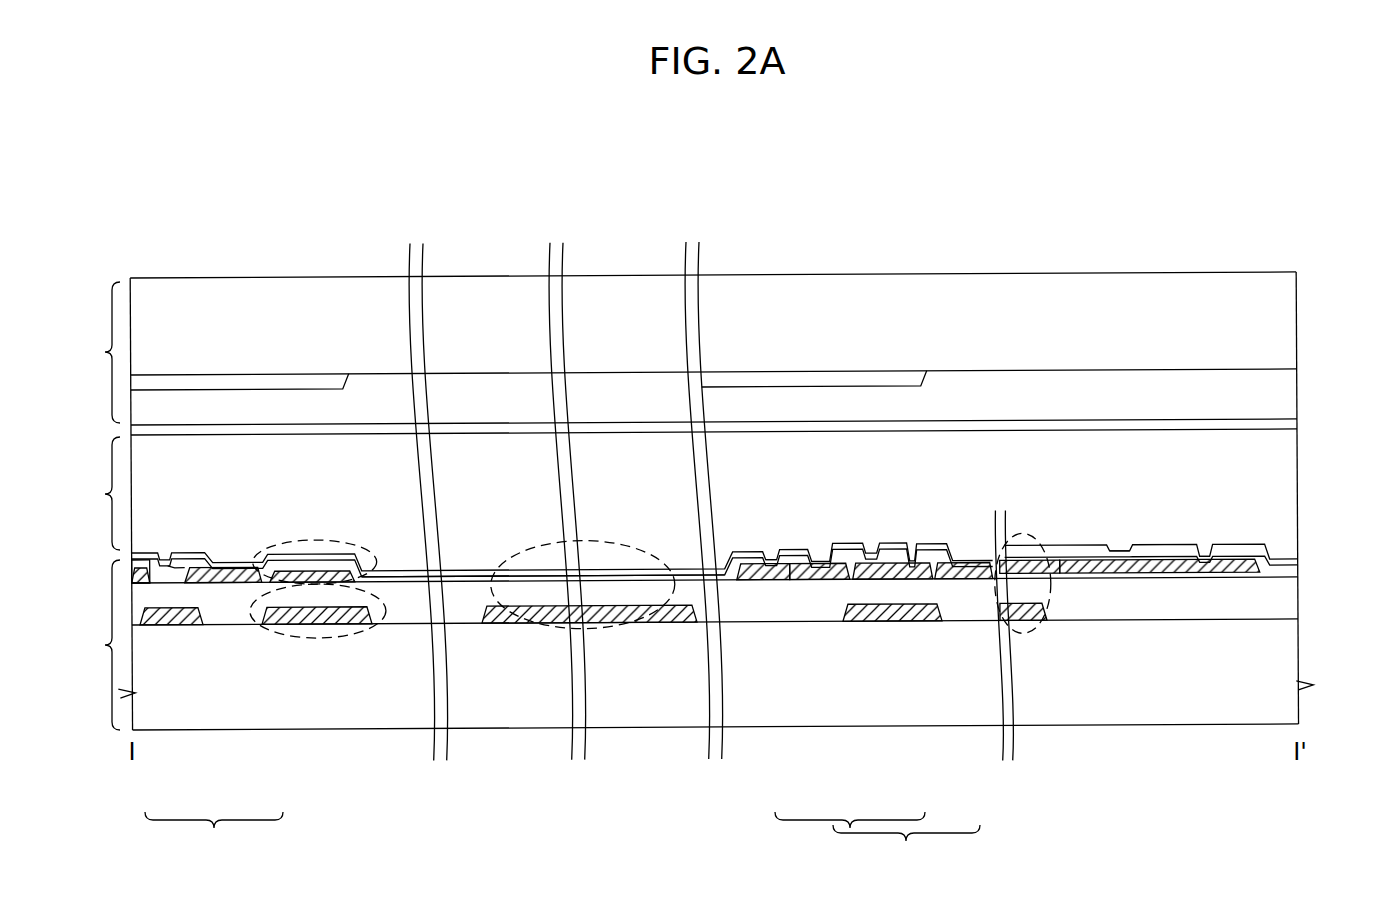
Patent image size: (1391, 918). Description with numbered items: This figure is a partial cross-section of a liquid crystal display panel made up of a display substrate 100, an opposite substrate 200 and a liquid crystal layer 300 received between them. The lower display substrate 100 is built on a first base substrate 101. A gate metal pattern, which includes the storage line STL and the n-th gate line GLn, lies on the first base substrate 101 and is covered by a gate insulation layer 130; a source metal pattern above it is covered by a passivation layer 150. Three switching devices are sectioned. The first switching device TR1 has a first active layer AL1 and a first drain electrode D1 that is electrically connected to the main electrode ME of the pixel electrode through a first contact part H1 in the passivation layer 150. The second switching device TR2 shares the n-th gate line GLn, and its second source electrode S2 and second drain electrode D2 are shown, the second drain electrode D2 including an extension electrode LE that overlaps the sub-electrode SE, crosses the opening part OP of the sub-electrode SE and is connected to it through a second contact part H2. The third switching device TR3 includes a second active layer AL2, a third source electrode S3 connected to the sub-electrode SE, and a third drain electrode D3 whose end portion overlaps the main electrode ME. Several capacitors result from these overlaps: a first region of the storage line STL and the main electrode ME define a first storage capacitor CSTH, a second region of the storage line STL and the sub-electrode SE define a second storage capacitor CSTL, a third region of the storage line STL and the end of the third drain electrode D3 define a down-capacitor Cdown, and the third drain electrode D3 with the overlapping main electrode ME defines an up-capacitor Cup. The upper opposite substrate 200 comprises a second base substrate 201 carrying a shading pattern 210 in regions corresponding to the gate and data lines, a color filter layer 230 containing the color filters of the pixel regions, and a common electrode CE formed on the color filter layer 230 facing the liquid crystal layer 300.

The second base substrate 201 is at (1292, 319).
The color filter layer 230 is at (1292, 393).
The shading pattern 210 is at (795, 380).
The common electrode CE is at (1292, 424).
The passivation layer 150 is at (1292, 573).
The gate insulation layer 130 is at (1292, 600).
The first base substrate 101 is at (1292, 705).
The opposite substrate 200 is at (93, 352).
The liquid crystal layer 300 is at (93, 493).
The display substrate 100 is at (93, 645).
The third source electrode S3 is at (140, 588).
The third drain electrode D3 is at (218, 577).
The second active layer AL2 is at (173, 562).
The up-capacitor Cup is at (312, 545).
The down-capacitor Cdown is at (336, 638).
The storage line STL is at (314, 615).
The third switching device TR3 is at (214, 835).
The main electrode ME is at (478, 563).
The first storage capacitor CSTH is at (606, 632).
The first drain electrode D1 is at (783, 577).
The first contact part H1 is at (778, 557).
The first active layer AL1 is at (870, 552).
The second source electrode S2 is at (882, 578).
The n-th gate line GLn is at (905, 614).
The second drain electrode D2 is at (968, 580).
The first switching device TR1 is at (850, 833).
The second switching device TR2 is at (906, 846).
The second storage capacitor CSTL is at (1025, 640).
The sub-electrode SE is at (1048, 552).
The extension electrode LE is at (1185, 577).
The opening part OP is at (1140, 545).
The second contact part H2 is at (1205, 556).